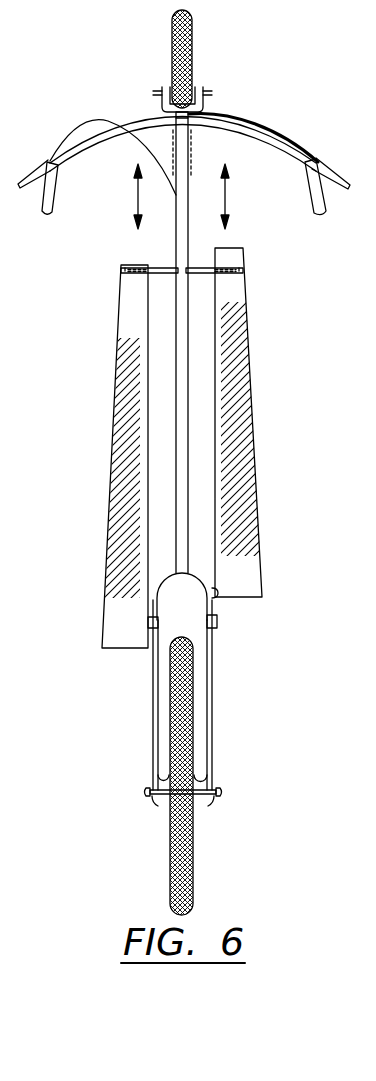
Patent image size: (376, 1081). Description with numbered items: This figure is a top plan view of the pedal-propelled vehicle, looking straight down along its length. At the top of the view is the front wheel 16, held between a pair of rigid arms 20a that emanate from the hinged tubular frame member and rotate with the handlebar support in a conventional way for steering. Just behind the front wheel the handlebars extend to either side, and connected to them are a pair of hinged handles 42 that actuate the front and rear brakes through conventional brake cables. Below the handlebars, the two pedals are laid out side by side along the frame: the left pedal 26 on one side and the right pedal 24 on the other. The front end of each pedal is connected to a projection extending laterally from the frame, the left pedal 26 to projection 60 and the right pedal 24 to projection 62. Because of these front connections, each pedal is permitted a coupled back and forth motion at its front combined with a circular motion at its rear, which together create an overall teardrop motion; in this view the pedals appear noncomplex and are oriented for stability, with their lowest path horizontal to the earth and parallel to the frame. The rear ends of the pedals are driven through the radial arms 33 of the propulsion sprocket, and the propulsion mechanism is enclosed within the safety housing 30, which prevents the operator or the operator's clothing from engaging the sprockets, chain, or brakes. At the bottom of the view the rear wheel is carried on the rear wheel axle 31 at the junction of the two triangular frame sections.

The front wheel 16 is at (194, 25).
The rigid arms 20a is at (212, 96).
The hinged handles 42 is at (332, 172).
The projection 60 is at (165, 266).
The projection 62 is at (197, 266).
The left pedal 26 is at (122, 335).
The right pedal 24 is at (246, 311).
The safety housing 30 is at (216, 608).
The rear wheel axle 31 is at (150, 790).
The radial arms 33 is at (152, 798).